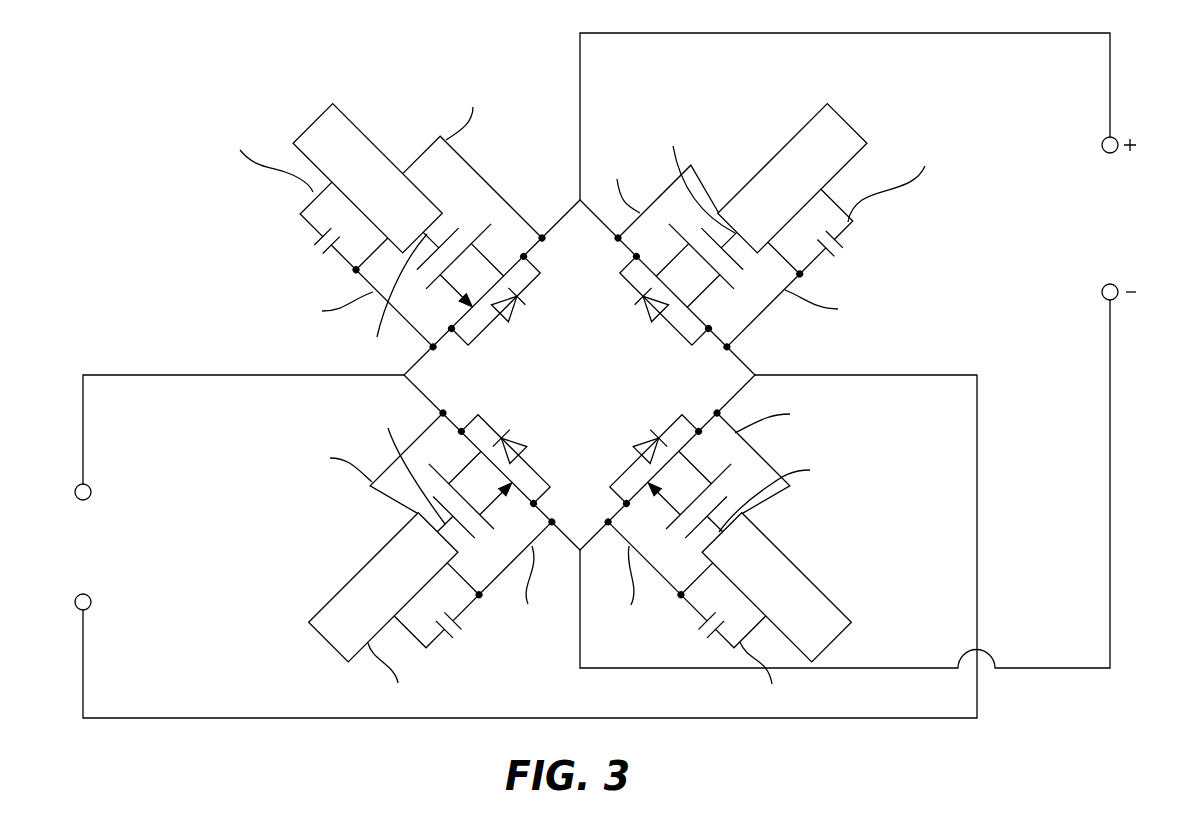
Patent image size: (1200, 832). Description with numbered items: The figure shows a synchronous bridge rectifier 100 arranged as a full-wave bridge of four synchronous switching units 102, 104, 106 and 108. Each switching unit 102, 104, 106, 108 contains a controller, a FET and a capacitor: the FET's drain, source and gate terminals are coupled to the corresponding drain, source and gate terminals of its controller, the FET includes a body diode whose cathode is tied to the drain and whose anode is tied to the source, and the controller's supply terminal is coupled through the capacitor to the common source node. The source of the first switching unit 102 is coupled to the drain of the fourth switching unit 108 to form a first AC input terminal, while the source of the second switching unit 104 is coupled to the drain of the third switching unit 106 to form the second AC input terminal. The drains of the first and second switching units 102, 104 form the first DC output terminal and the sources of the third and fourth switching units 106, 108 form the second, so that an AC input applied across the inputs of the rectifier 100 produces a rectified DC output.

The synchronous bridge rectifier 100 is at (530, 38).
The first switching unit 102 is at (420, 132).
The second switching unit 104 is at (754, 132).
The third switching unit 106 is at (830, 550).
The fourth switching unit 108 is at (350, 546).